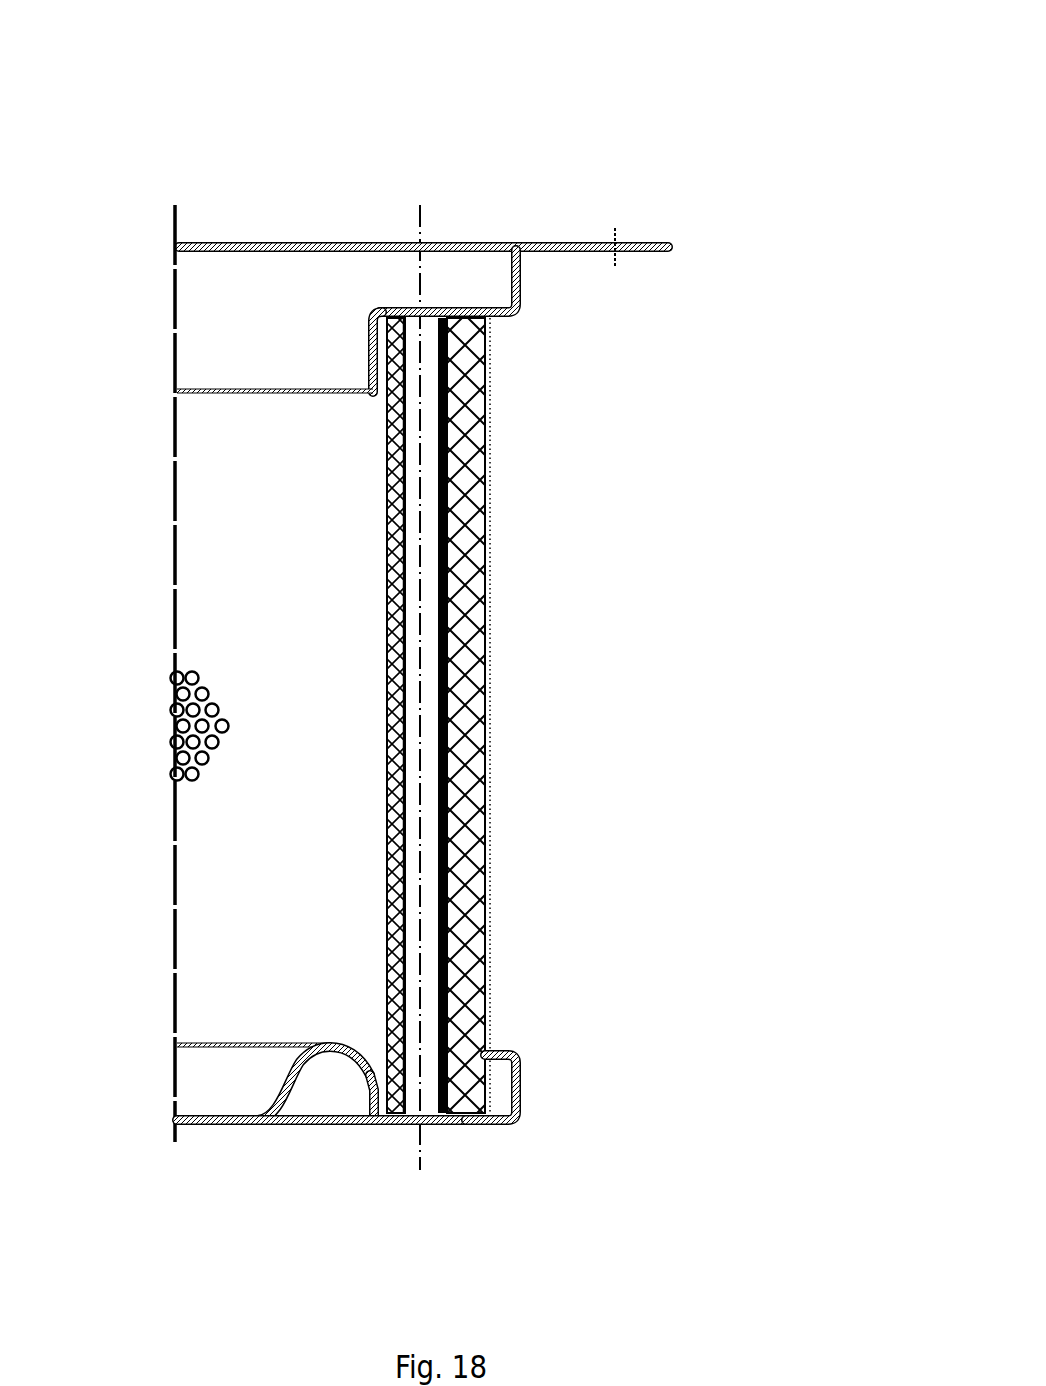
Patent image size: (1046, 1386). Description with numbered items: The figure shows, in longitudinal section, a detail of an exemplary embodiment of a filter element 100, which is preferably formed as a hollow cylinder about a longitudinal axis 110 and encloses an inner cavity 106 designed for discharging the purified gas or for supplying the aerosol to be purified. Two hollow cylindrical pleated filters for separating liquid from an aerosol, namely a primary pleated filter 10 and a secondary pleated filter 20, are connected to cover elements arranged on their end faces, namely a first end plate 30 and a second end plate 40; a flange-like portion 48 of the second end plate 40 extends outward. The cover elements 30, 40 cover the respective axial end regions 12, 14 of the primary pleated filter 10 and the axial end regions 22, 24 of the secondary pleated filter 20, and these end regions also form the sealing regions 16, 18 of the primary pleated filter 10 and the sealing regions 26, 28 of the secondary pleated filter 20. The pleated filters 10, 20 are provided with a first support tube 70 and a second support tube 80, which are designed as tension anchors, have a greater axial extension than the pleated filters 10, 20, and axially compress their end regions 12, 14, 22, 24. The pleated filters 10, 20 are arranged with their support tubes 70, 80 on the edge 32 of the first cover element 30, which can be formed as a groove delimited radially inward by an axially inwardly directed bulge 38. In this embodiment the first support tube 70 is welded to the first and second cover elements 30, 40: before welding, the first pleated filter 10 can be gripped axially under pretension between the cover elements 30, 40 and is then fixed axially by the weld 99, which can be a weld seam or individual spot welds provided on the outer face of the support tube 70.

The filter element 100 is at (772, 190).
The second end plate 40 is at (650, 236).
The flange portion 48 is at (549, 242).
The axial end region 14 is at (478, 294).
The axial end region 24 is at (398, 294).
The sealing region 28 is at (354, 338).
The sealing region 18 is at (507, 325).
The weld 99 is at (470, 335).
The longitudinal axis 110 is at (172, 441).
The inner cavity 106 is at (282, 602).
The secondary pleated filter 20 is at (386, 660).
The second support tube 80 is at (401, 720).
The first support tube 70 is at (455, 720).
The primary pleated filter 10 is at (487, 660).
The bulge 38 is at (334, 1043).
The sealing region 26 is at (355, 1092).
The first end plate 30 is at (206, 1138).
The sealing region 16 is at (509, 1092).
The axial end region 22 is at (397, 1138).
The axial end region 12 is at (476, 1138).
The edge 32 is at (490, 1128).